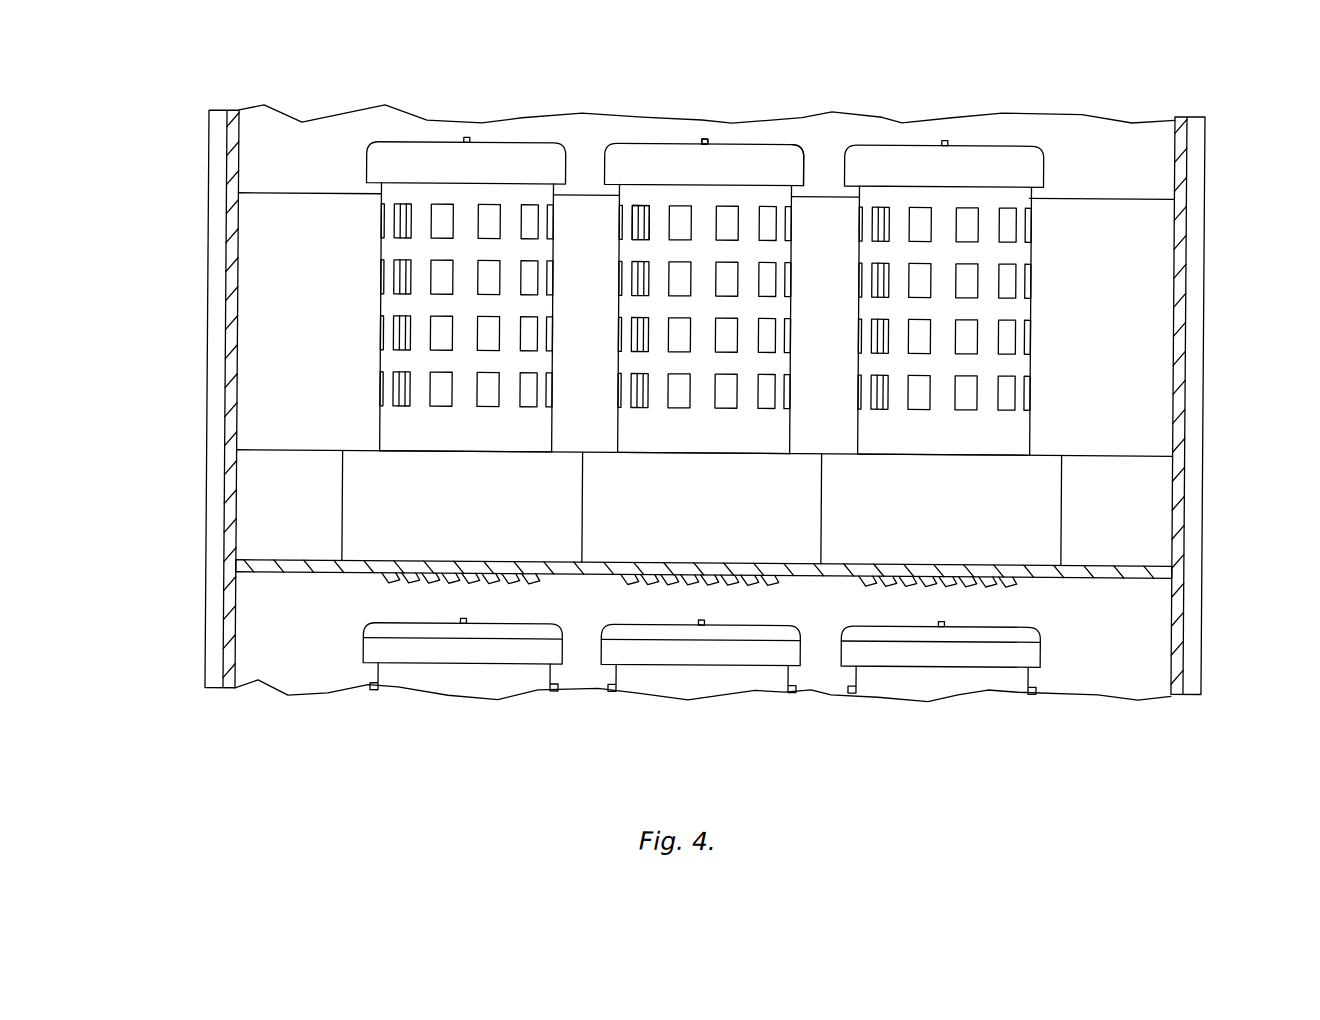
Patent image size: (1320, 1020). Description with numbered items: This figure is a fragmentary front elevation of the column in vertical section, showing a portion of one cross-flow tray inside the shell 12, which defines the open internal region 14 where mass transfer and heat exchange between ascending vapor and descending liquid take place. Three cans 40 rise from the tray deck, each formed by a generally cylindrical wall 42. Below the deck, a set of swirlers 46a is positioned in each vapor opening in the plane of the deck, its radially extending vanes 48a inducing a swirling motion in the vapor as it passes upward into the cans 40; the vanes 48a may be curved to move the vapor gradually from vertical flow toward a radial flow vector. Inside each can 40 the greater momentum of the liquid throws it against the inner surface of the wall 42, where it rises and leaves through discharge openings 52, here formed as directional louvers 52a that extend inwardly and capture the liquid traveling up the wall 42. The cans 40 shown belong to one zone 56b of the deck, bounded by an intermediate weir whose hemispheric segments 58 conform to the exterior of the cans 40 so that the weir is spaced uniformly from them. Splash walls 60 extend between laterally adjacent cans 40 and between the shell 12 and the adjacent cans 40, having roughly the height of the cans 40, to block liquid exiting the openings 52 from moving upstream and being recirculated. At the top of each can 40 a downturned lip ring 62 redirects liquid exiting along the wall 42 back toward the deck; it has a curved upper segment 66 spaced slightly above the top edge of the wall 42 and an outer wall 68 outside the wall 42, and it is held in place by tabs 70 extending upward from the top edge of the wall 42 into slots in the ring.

The shell 12 is at (1175, 175).
The open internal region 14 is at (1130, 176).
The cans 40 is at (712, 347).
The wall 42 is at (410, 438).
The swirlers 46a is at (532, 590).
The vanes 48a is at (477, 580).
The discharge openings 52 is at (378, 271).
The directional louvers 52a is at (637, 208).
The zone 56b is at (1147, 450).
The hemispheric segments 58 is at (512, 477).
The splash walls 60 is at (265, 275).
The lip ring 62 is at (738, 142).
The curved upper segment 66 is at (786, 146).
The outer wall 68 is at (807, 162).
The tabs 70 is at (703, 139).